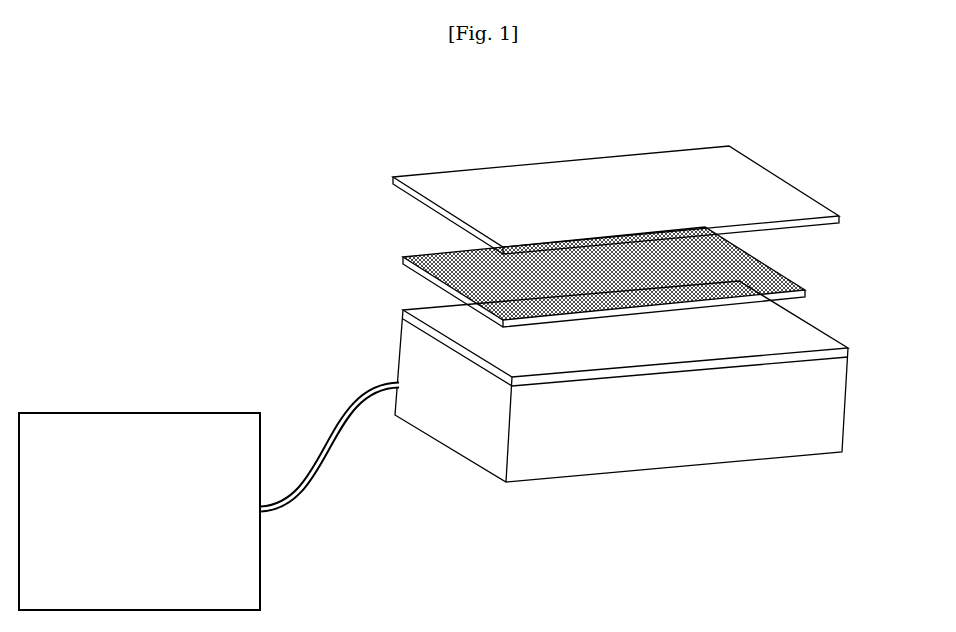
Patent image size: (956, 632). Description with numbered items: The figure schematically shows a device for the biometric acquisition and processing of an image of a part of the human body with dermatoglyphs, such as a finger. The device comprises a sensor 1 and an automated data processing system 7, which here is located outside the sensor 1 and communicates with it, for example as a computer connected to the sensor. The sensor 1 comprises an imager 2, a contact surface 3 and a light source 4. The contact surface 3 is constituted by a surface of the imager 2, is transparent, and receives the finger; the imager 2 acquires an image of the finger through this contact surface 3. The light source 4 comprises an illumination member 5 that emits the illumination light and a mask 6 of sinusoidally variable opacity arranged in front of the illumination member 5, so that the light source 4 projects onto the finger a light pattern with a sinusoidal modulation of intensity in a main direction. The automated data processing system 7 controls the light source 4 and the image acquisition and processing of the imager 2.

The sensor 1 is at (477, 114).
The imager 2 is at (811, 197).
The contact surface 3 is at (700, 165).
The light source 4 is at (664, 354).
The illumination member 5 is at (639, 381).
The mask 6 is at (807, 293).
The automated data processing system 7 is at (142, 412).